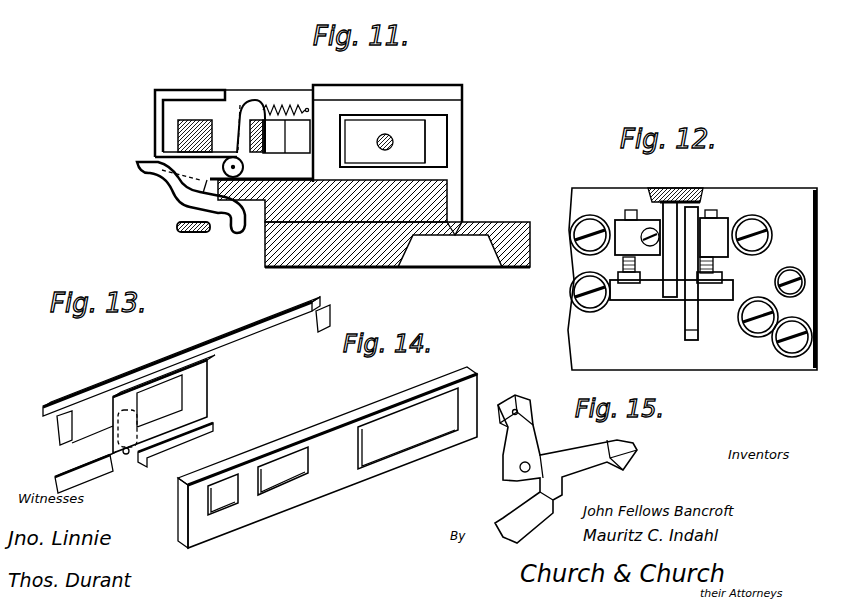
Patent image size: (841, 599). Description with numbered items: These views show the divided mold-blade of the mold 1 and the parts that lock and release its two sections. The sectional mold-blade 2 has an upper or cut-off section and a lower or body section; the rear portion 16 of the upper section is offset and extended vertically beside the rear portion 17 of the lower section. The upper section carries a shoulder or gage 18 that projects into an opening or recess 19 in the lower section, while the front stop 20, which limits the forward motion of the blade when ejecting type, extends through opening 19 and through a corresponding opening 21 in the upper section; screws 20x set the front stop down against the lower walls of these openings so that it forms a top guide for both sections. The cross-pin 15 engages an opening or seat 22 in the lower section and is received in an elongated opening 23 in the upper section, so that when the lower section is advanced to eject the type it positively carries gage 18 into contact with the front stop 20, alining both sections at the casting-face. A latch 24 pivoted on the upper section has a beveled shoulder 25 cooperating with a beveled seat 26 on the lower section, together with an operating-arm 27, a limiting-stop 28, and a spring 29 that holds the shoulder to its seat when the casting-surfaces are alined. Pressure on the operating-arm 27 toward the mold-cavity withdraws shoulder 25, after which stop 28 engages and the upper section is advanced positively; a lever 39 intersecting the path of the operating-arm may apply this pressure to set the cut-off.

In FIG. 11, the mold 1 is at (374, 235).
In FIG. 12, the mold 1 is at (692, 271).
In FIG. 11, the sectional mold-blade 2 is at (387, 143).
In FIG. 12, the sectional mold-blade 2 is at (672, 205).
In FIG. 14, the sectional mold-blade 2 is at (275, 411).
In FIG. 11, the cross-pin 15 is at (199, 117).
In FIG. 11, the rear portion of the upper mold-blade section 16 is at (197, 89).
In FIG. 13, the rear portion of the upper mold-blade section 16 is at (186, 371).
In FIG. 11, the rear portion of the lower mold-blade section 17 is at (155, 108).
In FIG. 14, the rear portion of the lower mold-blade section 17 is at (226, 470).
In FIG. 11, the shoulder or gage 18 is at (247, 105).
In FIG. 13, the shoulder or gage 18 is at (132, 388).
In FIG. 14, the opening or recess 19 is at (282, 475).
In FIG. 11, the front stop 20 is at (286, 136).
In FIG. 12, the front stop 20 is at (622, 220).
In FIG. 12, the screws 20x is at (720, 217).
In FIG. 11, the opening in the upper section 21 is at (272, 120).
In FIG. 13, the opening in the upper section 21 is at (164, 411).
In FIG. 14, the opening or seat 22 is at (260, 472).
In FIG. 11, the elongated opening 23 is at (178, 147).
In FIG. 13, the elongated opening 23 is at (85, 470).
In FIG. 11, the latch 24 is at (190, 197).
In FIG. 12, the latch 24 is at (690, 303).
In FIG. 15, the latch 24 is at (566, 469).
In FIG. 11, the beveled shoulder 25 is at (152, 193).
In FIG. 12, the beveled shoulder 25 is at (673, 282).
In FIG. 15, the beveled shoulder 25 is at (622, 468).
In FIG. 11, the beveled seat 26 is at (162, 168).
In FIG. 12, the beveled seat 26 is at (667, 263).
In FIG. 14, the beveled seat 26 is at (187, 535).
In FIG. 11, the operating-arm 27 is at (237, 233).
In FIG. 12, the operating-arm 27 is at (703, 340).
In FIG. 15, the operating-arm 27 is at (517, 536).
In FIG. 11, the limiting-stop 28 is at (244, 167).
In FIG. 13, the limiting-stop 28 is at (132, 450).
In FIG. 15, the limiting-stop 28 is at (506, 480).
In FIG. 11, the spring 29 is at (292, 103).
In FIG. 12, the spring 29 is at (703, 210).
In FIG. 11, the lever 39 is at (180, 233).